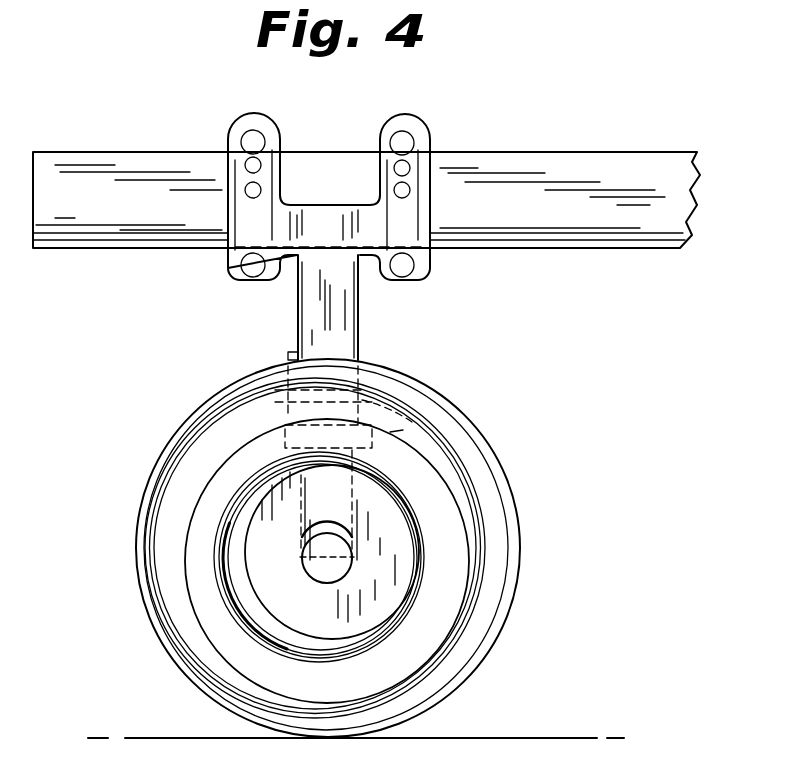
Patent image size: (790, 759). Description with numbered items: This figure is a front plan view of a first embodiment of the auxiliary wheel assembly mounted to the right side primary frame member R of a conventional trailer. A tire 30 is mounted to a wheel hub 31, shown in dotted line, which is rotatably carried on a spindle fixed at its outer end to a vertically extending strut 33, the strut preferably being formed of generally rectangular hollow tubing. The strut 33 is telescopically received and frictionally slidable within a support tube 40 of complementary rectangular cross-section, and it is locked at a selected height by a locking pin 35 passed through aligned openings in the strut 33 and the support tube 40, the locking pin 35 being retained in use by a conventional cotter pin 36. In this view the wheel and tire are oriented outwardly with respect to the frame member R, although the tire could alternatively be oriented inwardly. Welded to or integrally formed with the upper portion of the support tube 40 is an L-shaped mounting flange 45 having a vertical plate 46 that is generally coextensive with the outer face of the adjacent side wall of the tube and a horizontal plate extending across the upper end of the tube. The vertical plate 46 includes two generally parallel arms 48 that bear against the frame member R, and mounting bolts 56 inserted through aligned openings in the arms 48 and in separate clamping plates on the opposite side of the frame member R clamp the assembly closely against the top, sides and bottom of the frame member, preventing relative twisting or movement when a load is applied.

The right side primary frame member R is at (593, 152).
The arms 48 is at (228, 172).
The L-shaped mounting flange 45 is at (216, 266).
The vertical plate 46 is at (327, 202).
The mounting bolts 56 is at (253, 130).
The support tube 40 is at (378, 328).
The cotter pin 36 is at (288, 357).
The locking pin 35 is at (393, 393).
The tire 30 is at (513, 593).
The wheel hub 31 is at (413, 523).
The strut 33 is at (315, 502).